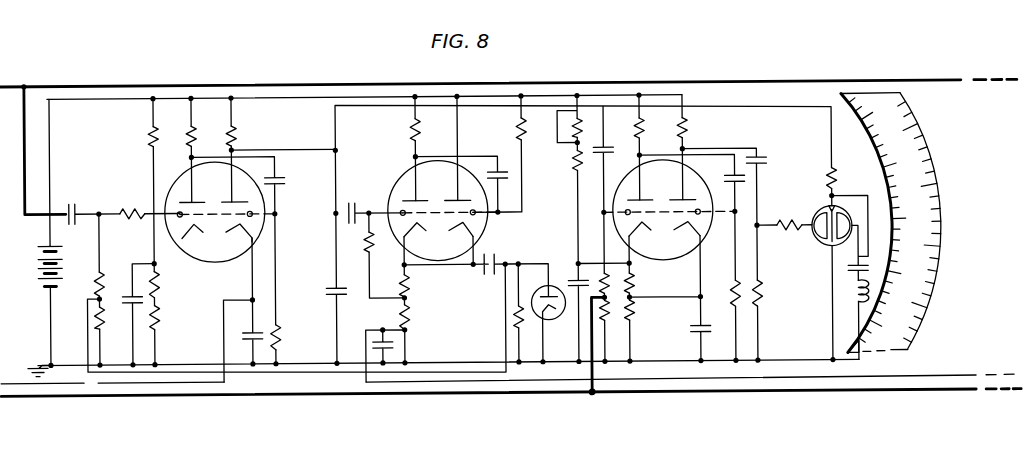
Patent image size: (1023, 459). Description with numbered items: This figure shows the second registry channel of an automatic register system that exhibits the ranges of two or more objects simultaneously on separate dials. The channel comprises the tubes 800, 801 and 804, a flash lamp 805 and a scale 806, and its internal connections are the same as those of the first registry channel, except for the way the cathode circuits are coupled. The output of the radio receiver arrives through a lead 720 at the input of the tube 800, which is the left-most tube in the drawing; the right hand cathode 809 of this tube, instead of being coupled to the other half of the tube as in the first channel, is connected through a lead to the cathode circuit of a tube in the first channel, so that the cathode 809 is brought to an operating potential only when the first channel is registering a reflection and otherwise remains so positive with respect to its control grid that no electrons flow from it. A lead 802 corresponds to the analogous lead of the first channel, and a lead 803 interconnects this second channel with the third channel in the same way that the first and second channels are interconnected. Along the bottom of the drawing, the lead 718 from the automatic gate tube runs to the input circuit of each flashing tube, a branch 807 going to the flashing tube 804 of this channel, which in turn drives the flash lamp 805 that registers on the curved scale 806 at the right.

The lead 720 is at (165, 83).
The lead 718 is at (326, 393).
The tube 800 is at (239, 227).
The tube 801 is at (486, 223).
The lead 802 is at (505, 338).
The lead 803 is at (516, 381).
The tube 804 is at (704, 240).
The flash lamp 805 is at (818, 242).
The scale 806 is at (907, 167).
The branch 807 is at (593, 373).
The right hand cathode 809 is at (252, 233).